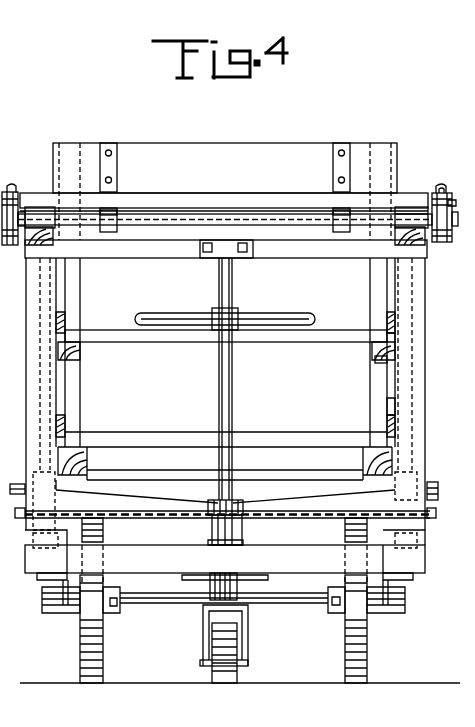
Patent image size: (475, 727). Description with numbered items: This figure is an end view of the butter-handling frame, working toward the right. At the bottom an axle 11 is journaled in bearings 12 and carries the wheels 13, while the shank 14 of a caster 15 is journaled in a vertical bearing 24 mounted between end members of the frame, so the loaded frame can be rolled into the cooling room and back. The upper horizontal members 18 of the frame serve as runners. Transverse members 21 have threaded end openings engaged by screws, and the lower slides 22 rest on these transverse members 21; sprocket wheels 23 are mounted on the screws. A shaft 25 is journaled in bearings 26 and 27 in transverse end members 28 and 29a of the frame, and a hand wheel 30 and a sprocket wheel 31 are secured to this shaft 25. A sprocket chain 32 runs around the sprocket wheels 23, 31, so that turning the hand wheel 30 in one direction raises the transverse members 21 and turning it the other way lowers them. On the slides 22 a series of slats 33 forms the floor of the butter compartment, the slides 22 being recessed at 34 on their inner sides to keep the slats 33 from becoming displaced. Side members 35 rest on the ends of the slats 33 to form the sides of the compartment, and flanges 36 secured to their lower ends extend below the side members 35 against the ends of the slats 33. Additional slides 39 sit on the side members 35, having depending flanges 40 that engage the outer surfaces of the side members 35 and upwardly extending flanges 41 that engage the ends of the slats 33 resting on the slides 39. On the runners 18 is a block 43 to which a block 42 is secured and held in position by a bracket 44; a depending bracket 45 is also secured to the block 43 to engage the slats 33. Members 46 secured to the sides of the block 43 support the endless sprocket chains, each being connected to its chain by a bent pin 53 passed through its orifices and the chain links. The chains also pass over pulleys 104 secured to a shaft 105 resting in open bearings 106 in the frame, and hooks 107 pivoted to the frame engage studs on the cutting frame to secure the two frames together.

The axle 11 is at (304, 604).
The bearings 12 is at (390, 613).
The wheels 13 is at (236, 629).
The shank 14 is at (203, 630).
The caster 15 is at (233, 668).
The upper horizontal members 18 is at (408, 214).
The transverse members 21 is at (225, 492).
The lower slides 22 is at (87, 462).
The sprocket wheels 23 is at (436, 512).
The vertical bearing 24 is at (180, 588).
The shaft 25 is at (233, 412).
The bearing 26 is at (234, 260).
The bearing 27 is at (212, 541).
The transverse end member 28 is at (226, 249).
The transverse end member 29a is at (225, 562).
The hand wheel 30 is at (272, 318).
The sprocket wheel 31 is at (246, 505).
The sprocket chain 32 is at (115, 513).
The slats 33 is at (334, 440).
The recess 34 is at (405, 442).
The side members 35 is at (387, 312).
The flanges 36 is at (387, 420).
The slides 39 is at (396, 345).
The depending flanges 40 is at (375, 362).
The upwardly extending flanges 41 is at (396, 333).
The block 42 is at (225, 191).
The block 43 is at (224, 202).
The bracket 44 is at (333, 172).
The depending bracket 45 is at (350, 208).
The members 46 is at (441, 185).
The bent pin 53 is at (452, 199).
The sheaves or pulleys 104 is at (458, 222).
The shaft 105 is at (385, 215).
The open bearings 106 is at (452, 210).
The hooks 107 is at (440, 478).